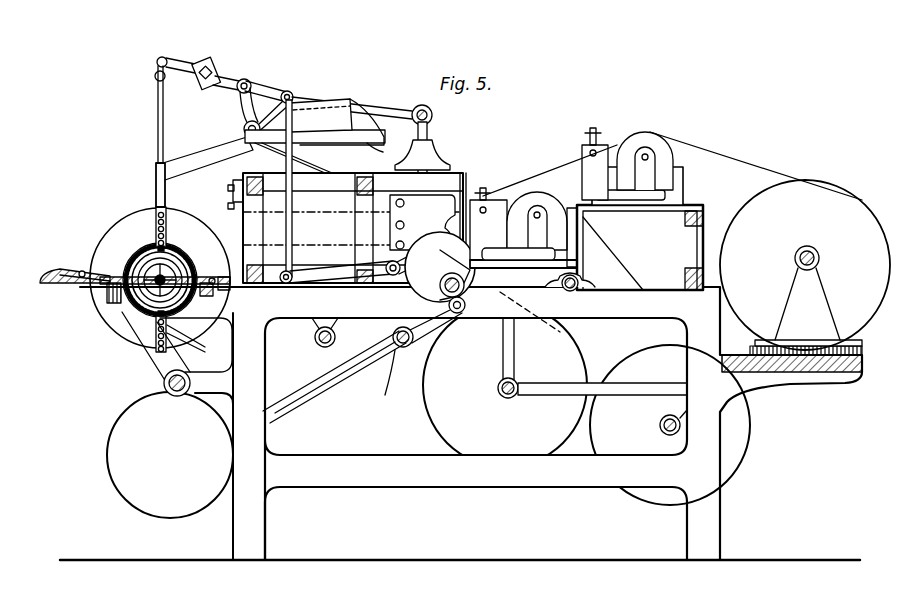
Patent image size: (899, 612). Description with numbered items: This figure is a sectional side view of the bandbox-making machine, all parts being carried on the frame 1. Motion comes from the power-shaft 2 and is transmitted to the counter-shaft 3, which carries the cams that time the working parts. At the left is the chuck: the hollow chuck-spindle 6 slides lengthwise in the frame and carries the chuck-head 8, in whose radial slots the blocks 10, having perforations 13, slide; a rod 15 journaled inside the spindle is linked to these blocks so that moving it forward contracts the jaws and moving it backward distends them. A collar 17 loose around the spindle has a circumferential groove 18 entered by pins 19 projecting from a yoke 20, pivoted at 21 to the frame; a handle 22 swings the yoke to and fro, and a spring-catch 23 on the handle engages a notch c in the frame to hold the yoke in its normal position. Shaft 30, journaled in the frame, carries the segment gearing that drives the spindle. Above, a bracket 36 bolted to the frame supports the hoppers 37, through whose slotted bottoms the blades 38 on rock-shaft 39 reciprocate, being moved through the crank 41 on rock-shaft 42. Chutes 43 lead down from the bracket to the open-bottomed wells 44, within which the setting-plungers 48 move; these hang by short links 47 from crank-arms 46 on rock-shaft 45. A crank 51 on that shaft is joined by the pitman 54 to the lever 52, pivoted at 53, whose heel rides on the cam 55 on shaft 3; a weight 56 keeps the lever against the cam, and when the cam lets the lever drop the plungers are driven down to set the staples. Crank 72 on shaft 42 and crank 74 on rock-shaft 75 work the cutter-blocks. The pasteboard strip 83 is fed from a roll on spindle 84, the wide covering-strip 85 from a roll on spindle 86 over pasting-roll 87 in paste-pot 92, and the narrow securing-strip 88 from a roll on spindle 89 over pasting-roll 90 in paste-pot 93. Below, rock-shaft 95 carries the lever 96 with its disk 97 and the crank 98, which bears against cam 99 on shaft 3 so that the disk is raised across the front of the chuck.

The frame 1 is at (461, 423).
The power-shaft 2 is at (574, 292).
The counter-shaft 3 is at (466, 305).
The chuck-spindle 6 is at (140, 282).
The chuck-head 8 is at (122, 332).
The blocks 10 is at (164, 212).
The perforations 13 is at (157, 215).
The rod 15 is at (202, 297).
The collar 17 is at (176, 252).
The circumferential groove 18 is at (133, 252).
The pins 19 is at (166, 224).
The yoke 20 is at (150, 255).
The pivot 21 is at (228, 290).
The handle 22 is at (50, 284).
The spring-catch 23 is at (108, 272).
The notch c is at (106, 292).
The shaft 30 is at (164, 382).
The bracket 36 is at (238, 170).
The hoppers 37 is at (315, 98).
The blades 38 is at (315, 151).
The rock-shaft 39 is at (245, 128).
The crank 41 is at (397, 112).
The rock-shaft 42 is at (420, 104).
The chutes 43 is at (197, 160).
The wells 44 is at (156, 182).
The rock-shaft 45 is at (247, 80).
The crank-arms 46 is at (173, 58).
The short links 47 is at (156, 64).
The setting-plungers 48 is at (157, 96).
The crank 51 is at (270, 92).
The lever 52 is at (330, 272).
The pivot 53 is at (390, 278).
The pitman 54 is at (288, 242).
The cam 55 is at (442, 290).
The weight 56 is at (212, 58).
The crank 72 is at (430, 158).
The crank 74 is at (335, 289).
The rock-shaft 75 is at (315, 339).
The pasteboard strip 83 is at (482, 268).
The spindle 84 is at (498, 391).
The covering-strip 85 is at (779, 182).
The spindle 86 is at (818, 256).
The pasting-roll 87 is at (662, 142).
The securing-strip 88 is at (628, 274).
The spindle 89 is at (660, 426).
The pasting-roll 90 is at (545, 200).
The paste-pot 92 is at (684, 181).
The paste-pot 93 is at (576, 256).
The rock-shaft 95 is at (396, 376).
The lever 96 is at (300, 396).
The disk 97 is at (170, 455).
The crank 98 is at (410, 343).
The cam 99 is at (440, 267).